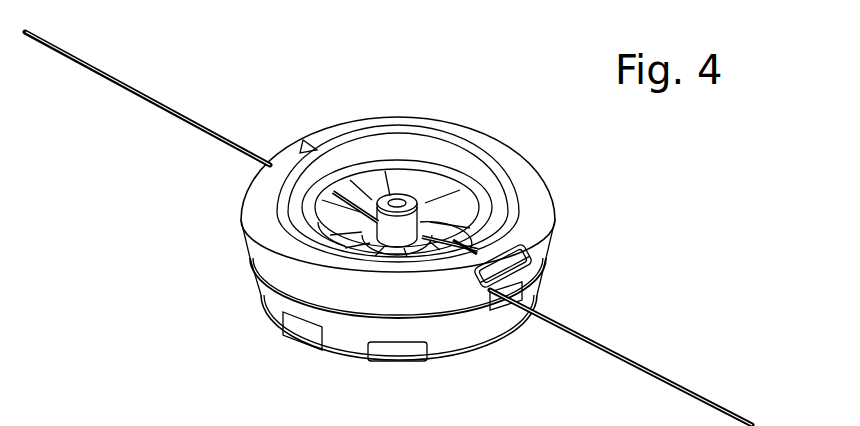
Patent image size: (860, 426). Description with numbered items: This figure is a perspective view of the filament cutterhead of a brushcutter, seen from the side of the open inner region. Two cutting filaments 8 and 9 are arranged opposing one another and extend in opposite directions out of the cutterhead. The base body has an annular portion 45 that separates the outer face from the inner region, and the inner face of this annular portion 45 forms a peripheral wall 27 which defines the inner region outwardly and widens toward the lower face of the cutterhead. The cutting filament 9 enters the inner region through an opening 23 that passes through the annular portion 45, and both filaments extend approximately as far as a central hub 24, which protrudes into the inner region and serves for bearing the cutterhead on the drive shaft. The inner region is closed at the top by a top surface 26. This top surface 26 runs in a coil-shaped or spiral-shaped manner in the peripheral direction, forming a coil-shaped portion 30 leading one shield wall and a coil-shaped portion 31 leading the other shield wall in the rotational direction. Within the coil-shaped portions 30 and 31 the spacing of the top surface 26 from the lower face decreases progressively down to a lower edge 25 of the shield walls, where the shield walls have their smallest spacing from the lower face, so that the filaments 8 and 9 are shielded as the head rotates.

The cutting filament 8 is at (194, 124).
The cutting filament 9 is at (640, 364).
The opening 23 is at (494, 292).
The hub 24 is at (397, 240).
The lower edge 25 is at (345, 211).
The top surface 26 is at (441, 205).
The peripheral wall 27 is at (487, 180).
The coil-shaped portion 30 is at (353, 232).
The coil-shaped portion 31 is at (447, 237).
The annular portion 45 is at (282, 270).